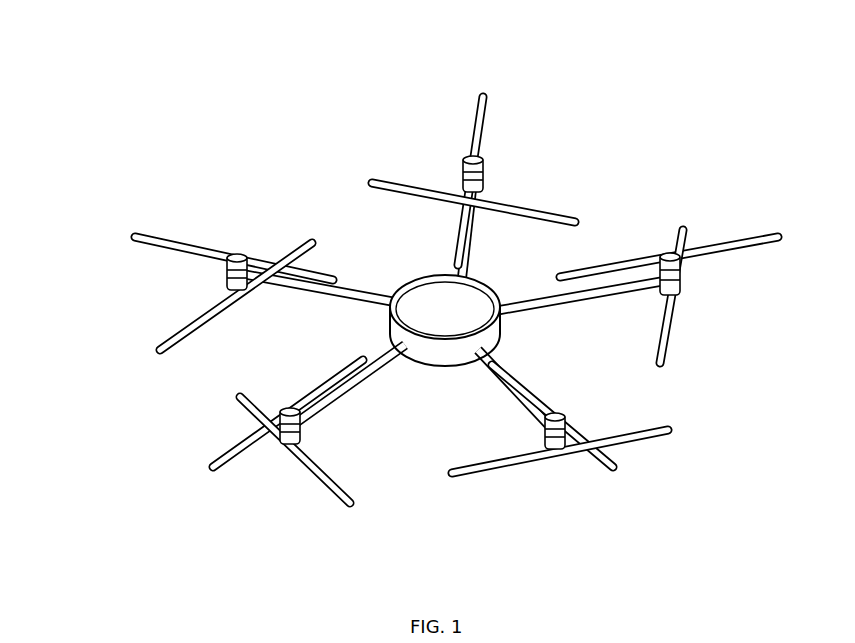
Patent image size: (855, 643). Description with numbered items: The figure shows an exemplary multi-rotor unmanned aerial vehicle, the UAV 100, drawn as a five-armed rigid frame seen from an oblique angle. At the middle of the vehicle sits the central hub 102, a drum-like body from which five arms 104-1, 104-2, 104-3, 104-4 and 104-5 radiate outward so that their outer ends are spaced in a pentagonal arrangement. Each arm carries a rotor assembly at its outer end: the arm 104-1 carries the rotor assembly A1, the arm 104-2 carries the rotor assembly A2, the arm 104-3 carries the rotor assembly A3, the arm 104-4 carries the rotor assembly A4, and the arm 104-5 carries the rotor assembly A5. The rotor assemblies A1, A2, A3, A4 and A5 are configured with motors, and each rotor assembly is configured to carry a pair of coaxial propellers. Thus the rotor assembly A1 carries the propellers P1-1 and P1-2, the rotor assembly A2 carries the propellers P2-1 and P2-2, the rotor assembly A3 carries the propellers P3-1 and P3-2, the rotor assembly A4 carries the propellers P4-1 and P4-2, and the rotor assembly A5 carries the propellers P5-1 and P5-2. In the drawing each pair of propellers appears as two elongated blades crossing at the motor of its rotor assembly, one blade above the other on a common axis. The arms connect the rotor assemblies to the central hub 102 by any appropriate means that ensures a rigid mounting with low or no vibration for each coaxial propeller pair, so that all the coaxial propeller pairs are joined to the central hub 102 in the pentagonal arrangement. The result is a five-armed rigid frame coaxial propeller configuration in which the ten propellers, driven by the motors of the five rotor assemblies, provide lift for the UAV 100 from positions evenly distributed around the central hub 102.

The UAV 100 is at (110, 56).
The central hub 102 is at (404, 280).
The arm 104-1 is at (280, 302).
The arm 104-2 is at (358, 403).
The arm 104-3 is at (492, 357).
The arm 104-4 is at (538, 291).
The arm 104-5 is at (447, 244).
The rotor assembly A1 is at (228, 278).
The rotor assembly A2 is at (307, 437).
The rotor assembly A3 is at (569, 458).
The rotor assembly A4 is at (690, 280).
The rotor assembly A5 is at (487, 175).
The propeller P1-1 is at (190, 243).
The propeller P1-2 is at (172, 327).
The propeller P2-1 is at (237, 410).
The propeller P2-2 is at (330, 497).
The propeller P3-1 is at (552, 390).
The propeller P3-2 is at (507, 468).
The propeller P4-1 is at (737, 238).
The propeller P4-2 is at (678, 347).
The propeller P5-1 is at (487, 97).
The propeller P5-2 is at (385, 177).